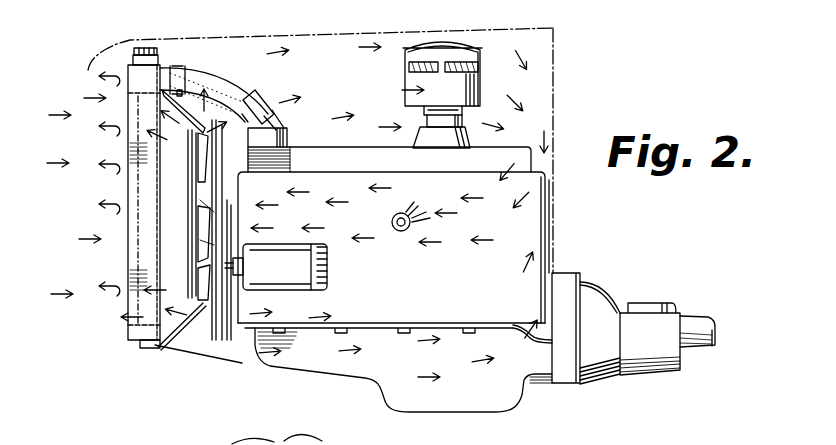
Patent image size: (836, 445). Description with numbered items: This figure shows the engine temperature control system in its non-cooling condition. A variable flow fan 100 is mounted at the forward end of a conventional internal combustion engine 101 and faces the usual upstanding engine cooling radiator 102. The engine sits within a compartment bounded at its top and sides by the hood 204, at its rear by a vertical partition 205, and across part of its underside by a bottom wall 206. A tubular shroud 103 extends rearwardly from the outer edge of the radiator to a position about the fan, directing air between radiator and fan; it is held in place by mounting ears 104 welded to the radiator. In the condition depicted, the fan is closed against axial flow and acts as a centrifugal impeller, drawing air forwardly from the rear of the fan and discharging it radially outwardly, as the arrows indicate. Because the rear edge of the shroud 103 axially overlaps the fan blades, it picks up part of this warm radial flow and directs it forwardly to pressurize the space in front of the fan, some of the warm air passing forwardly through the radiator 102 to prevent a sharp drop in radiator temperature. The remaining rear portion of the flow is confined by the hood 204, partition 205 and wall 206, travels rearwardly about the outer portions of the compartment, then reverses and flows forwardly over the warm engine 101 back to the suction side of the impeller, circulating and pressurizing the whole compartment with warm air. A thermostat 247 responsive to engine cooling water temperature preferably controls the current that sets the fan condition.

The variable flow fan 100 is at (216, 174).
The internal combustion engine 101 is at (346, 135).
The engine cooling radiator 102 is at (140, 213).
The tubular shroud 103 is at (185, 330).
The mounting ears 104 is at (148, 348).
The hood 204 is at (268, 36).
The vertical partition 205 is at (554, 235).
The bottom wall 206 is at (242, 362).
The thermostat 247 is at (398, 232).